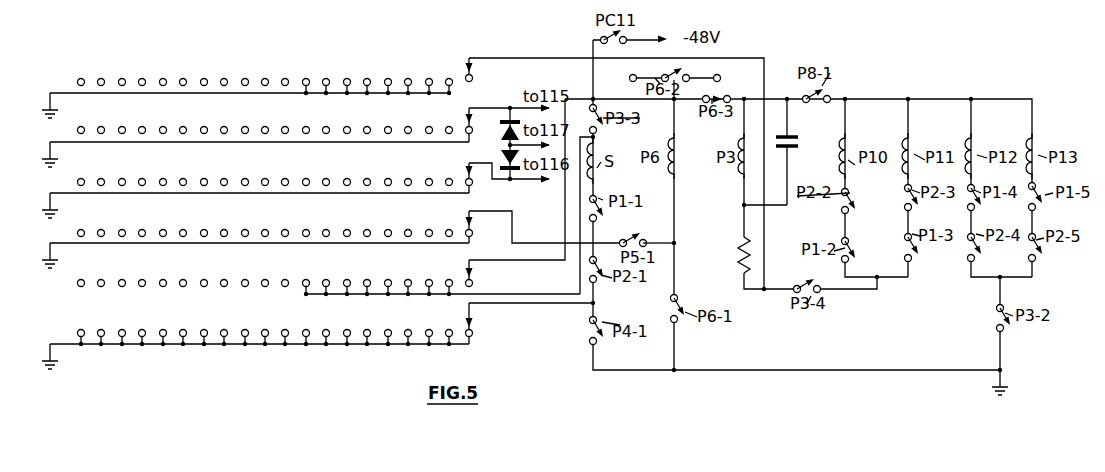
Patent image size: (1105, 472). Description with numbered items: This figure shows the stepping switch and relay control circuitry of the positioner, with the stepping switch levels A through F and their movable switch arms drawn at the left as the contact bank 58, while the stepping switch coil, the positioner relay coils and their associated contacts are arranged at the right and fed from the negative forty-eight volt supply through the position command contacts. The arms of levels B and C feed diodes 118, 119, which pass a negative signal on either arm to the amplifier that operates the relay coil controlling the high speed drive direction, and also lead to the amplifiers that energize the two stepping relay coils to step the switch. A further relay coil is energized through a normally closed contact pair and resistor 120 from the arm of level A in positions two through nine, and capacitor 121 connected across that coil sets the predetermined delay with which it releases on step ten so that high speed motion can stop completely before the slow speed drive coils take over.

The switch contact matrix 58 is at (214, 352).
The diode 118 is at (503, 157).
The diode 119 is at (504, 131).
The resistor 120 is at (742, 241).
The capacitor 121 is at (797, 142).